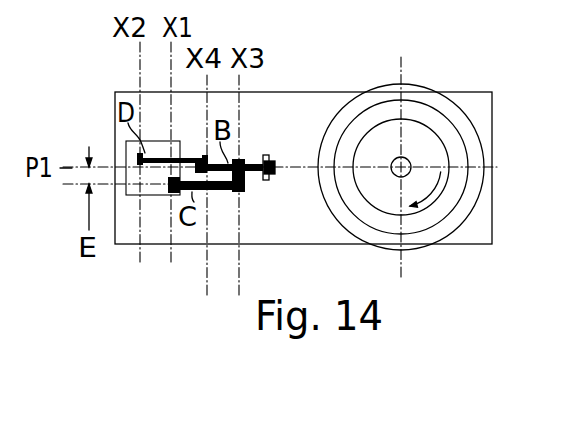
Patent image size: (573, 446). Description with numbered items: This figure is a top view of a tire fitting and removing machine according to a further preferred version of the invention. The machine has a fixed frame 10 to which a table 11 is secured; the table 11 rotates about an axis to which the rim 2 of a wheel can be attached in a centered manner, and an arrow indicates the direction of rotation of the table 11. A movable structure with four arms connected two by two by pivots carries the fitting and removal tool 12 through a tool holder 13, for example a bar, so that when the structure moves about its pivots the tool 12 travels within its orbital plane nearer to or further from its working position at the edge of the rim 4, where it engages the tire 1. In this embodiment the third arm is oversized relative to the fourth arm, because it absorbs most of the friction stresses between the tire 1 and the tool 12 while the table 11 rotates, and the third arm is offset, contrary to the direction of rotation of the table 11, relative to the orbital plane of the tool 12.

The tire 1 is at (443, 127).
The rim 2 is at (422, 137).
The edge of the rim 4 is at (353, 168).
The fixed frame 10 is at (483, 225).
The table 11 is at (473, 148).
The fitting and removal tool 12 is at (268, 157).
The tool holder 13 is at (268, 178).